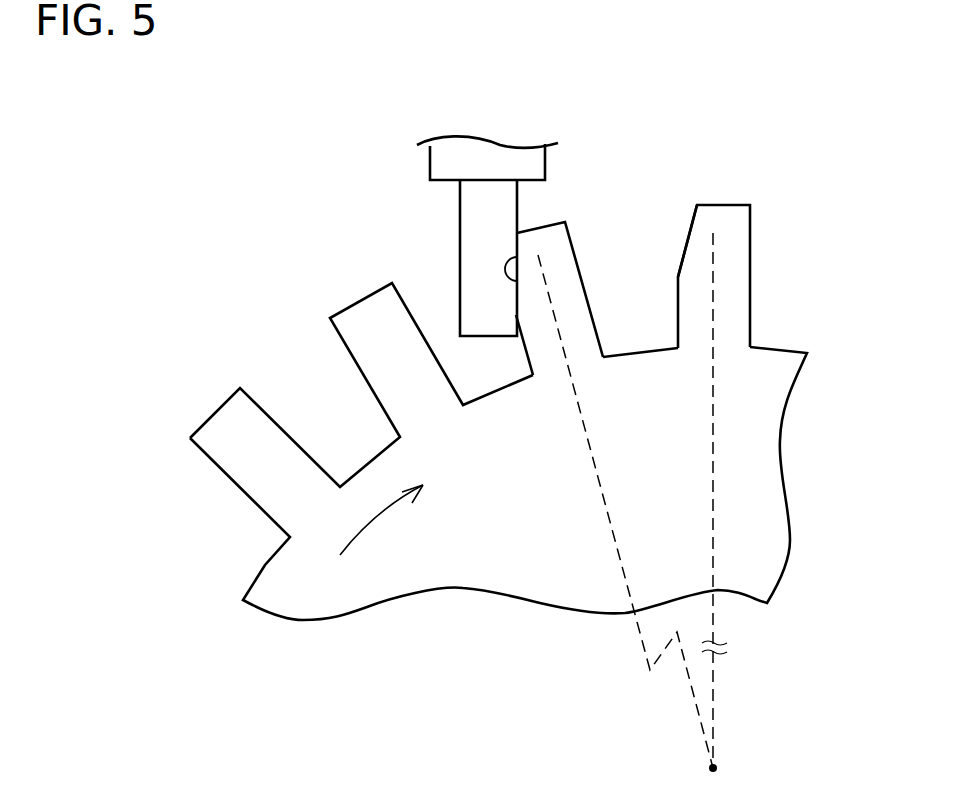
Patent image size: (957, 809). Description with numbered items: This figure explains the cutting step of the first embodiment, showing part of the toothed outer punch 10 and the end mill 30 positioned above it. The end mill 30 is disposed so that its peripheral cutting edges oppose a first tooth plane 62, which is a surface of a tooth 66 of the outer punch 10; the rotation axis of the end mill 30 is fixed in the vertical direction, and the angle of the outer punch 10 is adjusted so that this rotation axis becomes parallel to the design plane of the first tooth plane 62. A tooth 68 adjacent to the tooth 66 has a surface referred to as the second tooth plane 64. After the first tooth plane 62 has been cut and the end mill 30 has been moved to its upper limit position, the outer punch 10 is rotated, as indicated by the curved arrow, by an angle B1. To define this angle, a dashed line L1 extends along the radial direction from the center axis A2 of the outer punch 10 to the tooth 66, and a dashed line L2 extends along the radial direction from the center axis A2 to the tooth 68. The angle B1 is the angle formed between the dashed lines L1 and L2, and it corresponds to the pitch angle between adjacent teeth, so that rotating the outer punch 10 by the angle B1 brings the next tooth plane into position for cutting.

The outer punch 10 is at (779, 346).
The end mill 30 is at (532, 162).
The first tooth plane 62 is at (686, 236).
The second tooth plane 64 is at (517, 281).
The tooth 66 is at (733, 220).
The tooth 68 is at (555, 242).
The dashed line L1 is at (713, 533).
The dashed line L2 is at (617, 570).
The angle B1 is at (610, 522).
The center axis A2 is at (733, 769).